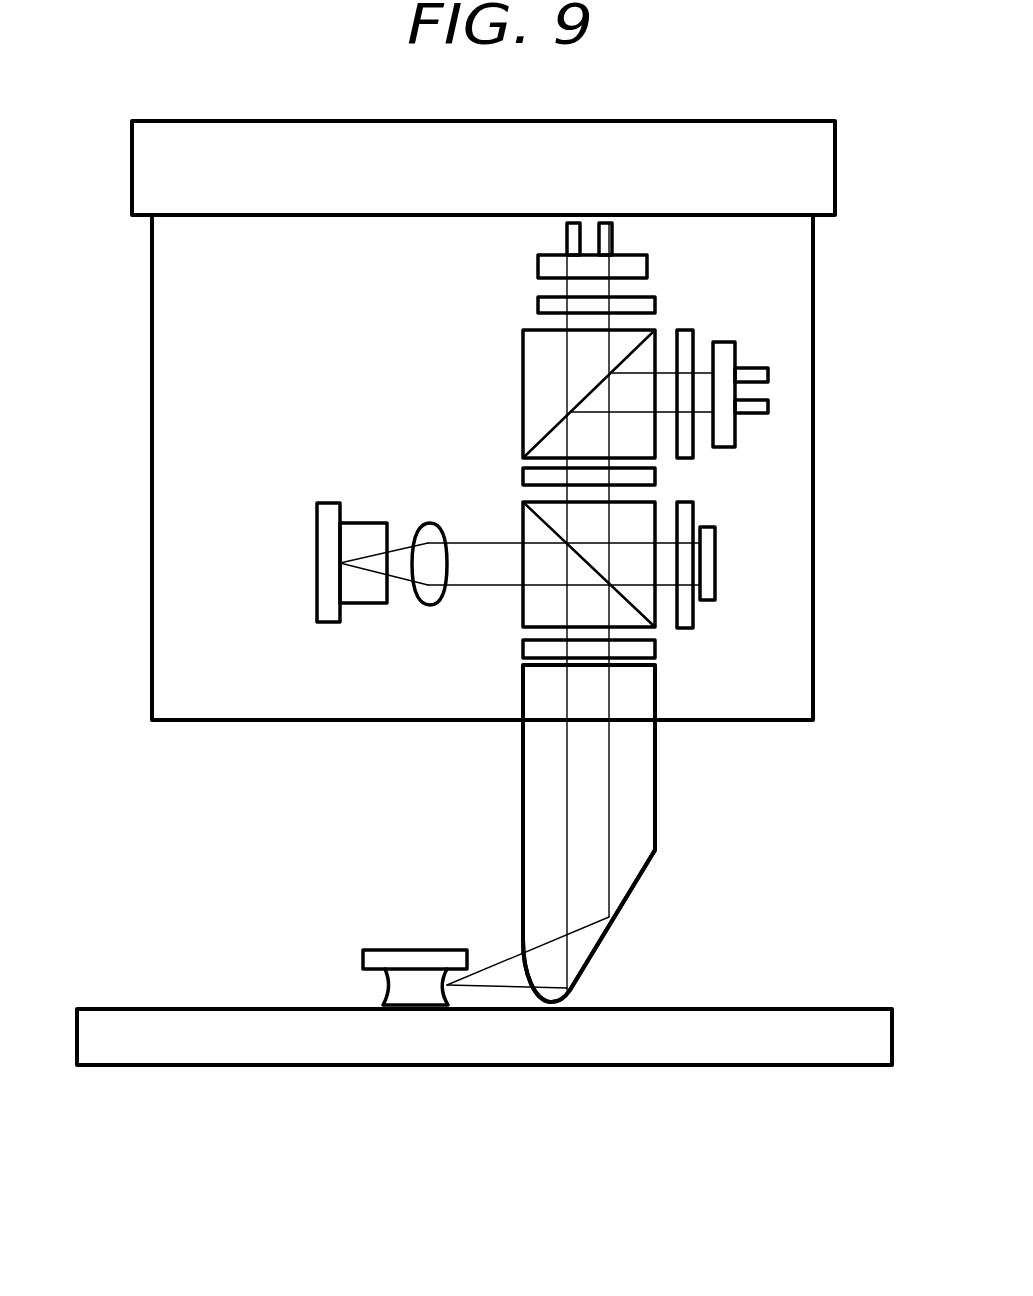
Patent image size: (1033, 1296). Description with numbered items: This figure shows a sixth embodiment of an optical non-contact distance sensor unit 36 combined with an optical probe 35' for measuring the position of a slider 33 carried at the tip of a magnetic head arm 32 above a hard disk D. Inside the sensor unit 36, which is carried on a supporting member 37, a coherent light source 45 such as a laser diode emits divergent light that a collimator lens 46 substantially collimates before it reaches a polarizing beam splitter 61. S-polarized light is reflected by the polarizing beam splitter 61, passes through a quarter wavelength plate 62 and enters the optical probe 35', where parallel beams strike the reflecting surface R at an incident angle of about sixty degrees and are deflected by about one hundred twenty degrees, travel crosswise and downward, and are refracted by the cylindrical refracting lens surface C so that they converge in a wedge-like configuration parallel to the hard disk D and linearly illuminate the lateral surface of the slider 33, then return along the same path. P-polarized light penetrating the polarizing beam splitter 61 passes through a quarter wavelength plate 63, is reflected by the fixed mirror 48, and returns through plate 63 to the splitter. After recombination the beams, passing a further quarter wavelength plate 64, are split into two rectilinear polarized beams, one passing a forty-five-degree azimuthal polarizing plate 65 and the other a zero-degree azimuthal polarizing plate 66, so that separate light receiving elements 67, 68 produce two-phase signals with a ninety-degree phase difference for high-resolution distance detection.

The top frame member 37 is at (835, 143).
The optical non-contact distance sensor unit 36 is at (813, 272).
The light receiving element 67 is at (647, 263).
The polarizing plate 65 is at (523, 303).
The polarizing plate 66 is at (689, 330).
The light receiving element 68 is at (730, 342).
The 1/4 wavelength plate 64 is at (523, 475).
The polarizing beam splitter 61 is at (650, 622).
The 1/4 wavelength plate 63 is at (690, 502).
The mirror 48 is at (715, 536).
The 1/4 wavelength plate 62 is at (523, 649).
The coherent light source 45 is at (330, 503).
The collimator lens 46 is at (428, 523).
The optical probe 35' is at (650, 833).
The reflecting surface R is at (590, 958).
The refracting lens surface C is at (535, 965).
The magnetic head arm 32 is at (435, 950).
The slider 33 is at (388, 985).
The hard disk D is at (818, 1009).